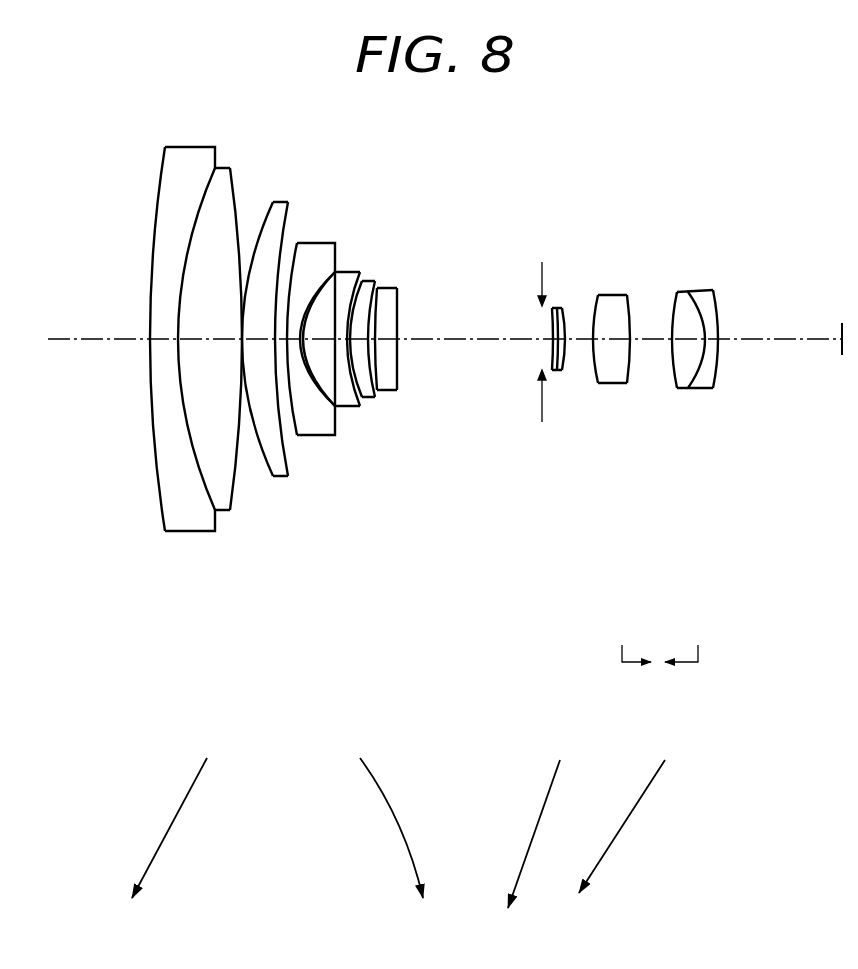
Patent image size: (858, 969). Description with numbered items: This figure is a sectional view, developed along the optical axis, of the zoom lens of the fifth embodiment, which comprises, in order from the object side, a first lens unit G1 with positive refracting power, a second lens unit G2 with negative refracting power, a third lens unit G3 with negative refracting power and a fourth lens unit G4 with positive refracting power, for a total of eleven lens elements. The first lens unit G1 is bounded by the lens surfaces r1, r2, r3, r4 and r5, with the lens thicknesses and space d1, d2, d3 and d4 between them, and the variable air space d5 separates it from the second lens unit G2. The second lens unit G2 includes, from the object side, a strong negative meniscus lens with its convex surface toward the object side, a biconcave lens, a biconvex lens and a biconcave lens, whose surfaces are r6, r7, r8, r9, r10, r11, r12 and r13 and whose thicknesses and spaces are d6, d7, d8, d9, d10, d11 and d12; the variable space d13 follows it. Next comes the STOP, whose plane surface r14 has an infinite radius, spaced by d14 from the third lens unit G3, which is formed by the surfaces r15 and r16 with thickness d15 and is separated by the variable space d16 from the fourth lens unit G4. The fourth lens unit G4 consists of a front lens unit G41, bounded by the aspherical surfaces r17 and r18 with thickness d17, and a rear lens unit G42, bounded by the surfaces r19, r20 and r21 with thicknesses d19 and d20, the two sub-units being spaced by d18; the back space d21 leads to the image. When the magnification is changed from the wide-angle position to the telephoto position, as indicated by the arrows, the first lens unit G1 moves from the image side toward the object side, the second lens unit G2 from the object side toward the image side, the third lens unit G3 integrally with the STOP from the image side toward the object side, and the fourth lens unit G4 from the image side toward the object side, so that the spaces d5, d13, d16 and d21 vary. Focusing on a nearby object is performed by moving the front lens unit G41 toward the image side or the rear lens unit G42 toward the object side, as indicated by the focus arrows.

The radius of curvature of first lens surface r1 is at (158, 184).
The radius of curvature of second lens surface r2 is at (200, 200).
The radius of curvature of third lens surface r3 is at (234, 190).
The radius of curvature of fourth lens surface r4 is at (258, 232).
The radius of curvature of fifth lens surface r5 is at (291, 215).
The radius of curvature of sixth lens surface r6 is at (292, 260).
The radius of curvature of seventh lens surface r7 is at (340, 296).
The radius of curvature of eighth lens surface r8 is at (343, 292).
The radius of curvature of ninth lens surface r9 is at (370, 292).
The radius of curvature of tenth lens surface r10 is at (367, 305).
The radius of curvature of eleventh lens surface r11 is at (377, 310).
The radius of curvature of twelfth lens surface r12 is at (382, 312).
The radius of curvature of thirteenth lens surface r13 is at (398, 320).
The stop surface r14 is at (550, 303).
The radius of curvature of fifteenth lens surface r15 is at (558, 305).
The radius of curvature of sixteenth lens surface r16 is at (567, 308).
The aspherical lens surface r17 is at (594, 306).
The aspherical lens surface r18 is at (629, 300).
The radius of curvature of nineteenth lens surface r19 is at (669, 302).
The radius of curvature of twentieth lens surface r20 is at (698, 296).
The radius of curvature of twenty-first lens surface r21 is at (717, 305).
The lens thickness d1 is at (163, 341).
The lens thickness d2 is at (242, 341).
The air space d3 is at (178, 341).
The lens thickness d4 is at (260, 341).
The variable air space d5 is at (281, 342).
The lens thickness d6 is at (294, 342).
The air space d7 is at (304, 342).
The lens thickness d8 is at (328, 342).
The air space d9 is at (349, 342).
The lens thickness d10 is at (369, 342).
The air space d11 is at (377, 342).
The lens thickness d12 is at (398, 342).
The variable air space d13 is at (500, 342).
The air space d14 is at (547, 345).
The lens thickness d15 is at (556, 343).
The variable air space d16 is at (575, 342).
The lens thickness d17 is at (610, 342).
The air space d18 is at (647, 342).
The lens thickness d19 is at (668, 345).
The lens thickness d20 is at (703, 342).
The variable back space d21 is at (790, 340).
The first lens unit G1 is at (205, 484).
The second lens unit G2 is at (399, 507).
The third lens unit G3 is at (556, 551).
The fourth lens unit G4 is at (693, 544).
The front lens unit of the fourth lens unit G41 is at (618, 445).
The rear lens unit of the fourth lens unit G42 is at (701, 445).
The stop STOP is at (542, 422).